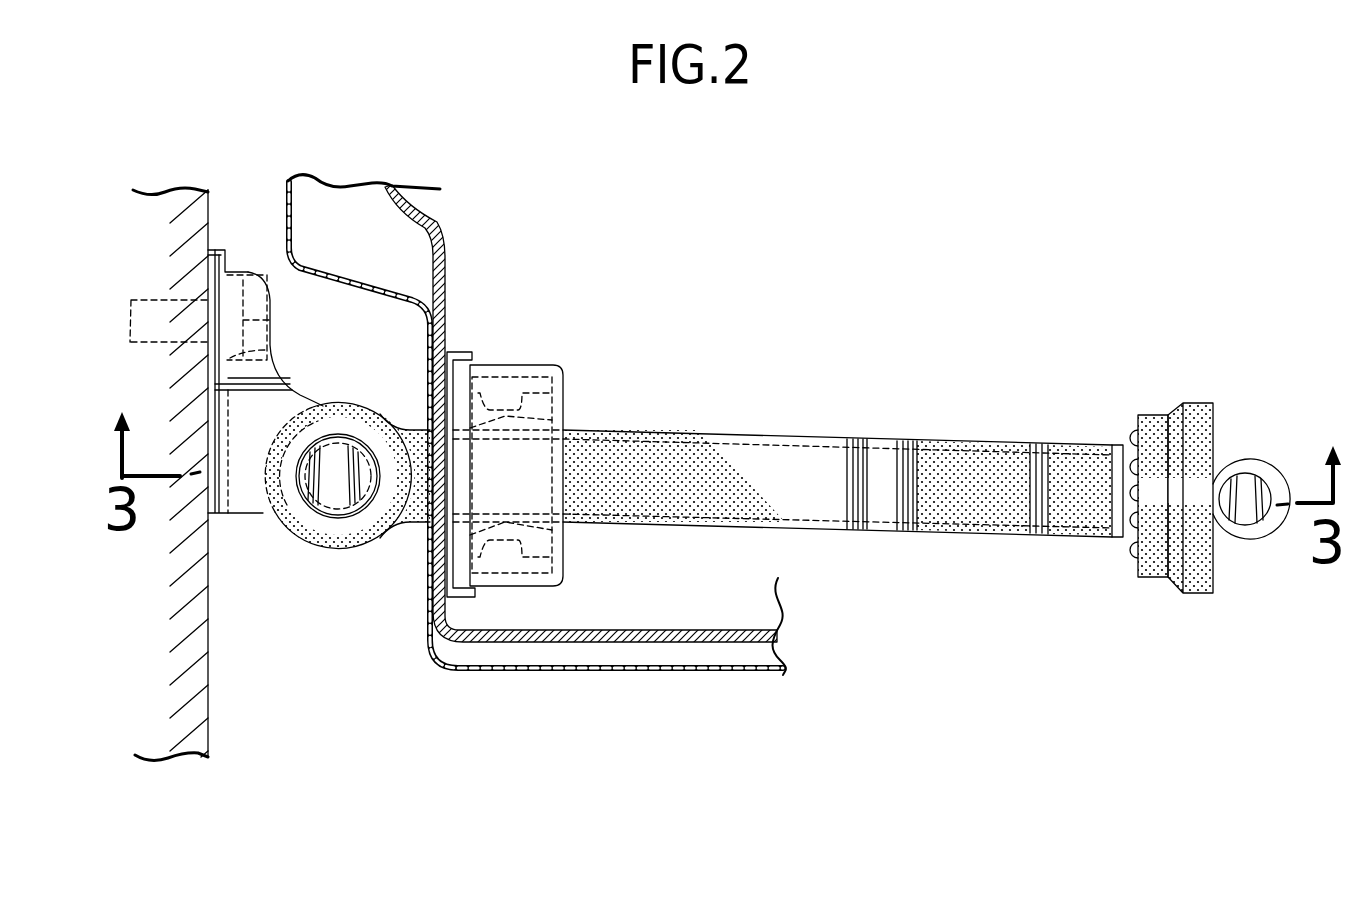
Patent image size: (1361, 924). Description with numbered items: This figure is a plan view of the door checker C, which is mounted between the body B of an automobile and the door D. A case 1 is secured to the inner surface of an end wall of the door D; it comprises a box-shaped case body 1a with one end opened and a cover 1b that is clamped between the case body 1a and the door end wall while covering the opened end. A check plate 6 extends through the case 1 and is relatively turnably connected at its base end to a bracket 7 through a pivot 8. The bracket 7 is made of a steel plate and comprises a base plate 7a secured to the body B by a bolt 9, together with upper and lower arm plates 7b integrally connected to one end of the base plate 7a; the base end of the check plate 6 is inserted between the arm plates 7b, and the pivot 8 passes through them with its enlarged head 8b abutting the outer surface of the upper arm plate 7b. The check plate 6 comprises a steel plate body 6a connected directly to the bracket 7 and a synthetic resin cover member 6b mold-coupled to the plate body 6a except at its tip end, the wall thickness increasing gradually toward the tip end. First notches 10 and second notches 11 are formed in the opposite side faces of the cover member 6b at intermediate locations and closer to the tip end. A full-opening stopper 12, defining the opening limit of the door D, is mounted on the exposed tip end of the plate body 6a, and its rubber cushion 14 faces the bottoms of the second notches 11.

The case 1 is at (508, 411).
The case body 1a is at (462, 278).
The cover 1b is at (465, 352).
The check plate 6 is at (694, 520).
The plate body 6a is at (947, 510).
The cover member 6b is at (818, 495).
The bracket 7 is at (231, 425).
The base plate 7a is at (208, 260).
The arm plate 7b is at (331, 418).
The pivot 8 is at (329, 539).
The enlarged head 8b is at (327, 500).
The bolt 9 is at (251, 257).
The first notch 10 is at (865, 477).
The second notch 11 is at (1050, 492).
The full-opening stopper 12 is at (1160, 585).
The rubber cushion 14 is at (1160, 427).
The body B is at (205, 689).
The door checker C is at (836, 308).
The door D is at (433, 221).